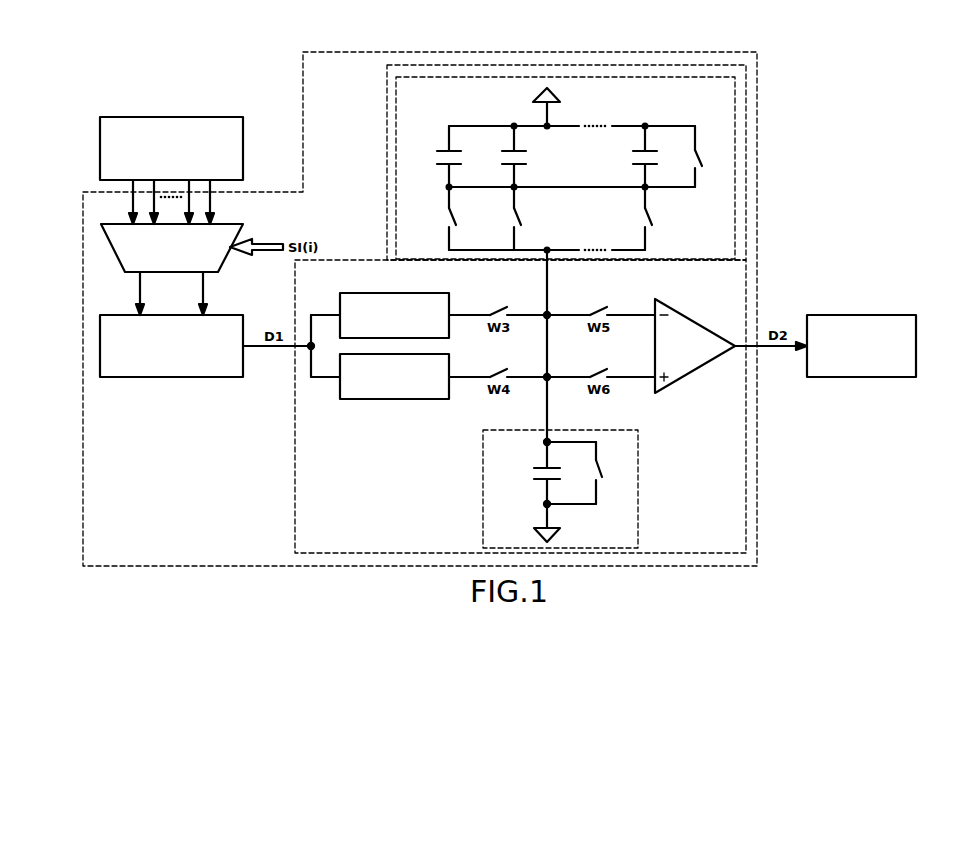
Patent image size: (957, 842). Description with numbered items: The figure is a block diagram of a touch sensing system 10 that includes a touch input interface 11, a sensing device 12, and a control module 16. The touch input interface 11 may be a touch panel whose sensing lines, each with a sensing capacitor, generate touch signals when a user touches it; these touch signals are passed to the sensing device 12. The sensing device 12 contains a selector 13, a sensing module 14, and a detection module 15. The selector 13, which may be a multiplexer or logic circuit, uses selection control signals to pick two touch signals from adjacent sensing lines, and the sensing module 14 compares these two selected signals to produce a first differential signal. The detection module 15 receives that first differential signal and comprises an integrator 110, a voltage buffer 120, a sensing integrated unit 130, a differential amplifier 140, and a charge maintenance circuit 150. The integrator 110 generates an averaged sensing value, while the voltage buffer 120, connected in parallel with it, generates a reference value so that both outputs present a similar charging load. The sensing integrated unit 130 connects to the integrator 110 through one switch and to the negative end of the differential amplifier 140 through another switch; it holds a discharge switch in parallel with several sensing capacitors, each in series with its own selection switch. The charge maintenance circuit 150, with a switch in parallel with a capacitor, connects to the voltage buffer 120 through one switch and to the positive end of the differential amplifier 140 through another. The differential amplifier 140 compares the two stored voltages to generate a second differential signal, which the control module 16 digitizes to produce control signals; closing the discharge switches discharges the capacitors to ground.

The touch sensing system 10 is at (922, 49).
The touch input interface 11 is at (102, 117).
The sensing device 12 is at (757, 95).
The selector 13 is at (108, 224).
The sensing module 14 is at (117, 377).
The detection module 15 is at (295, 464).
The control module 16 is at (905, 315).
The integrator 110 is at (340, 293).
The voltage buffer 120 is at (345, 399).
The sensing integrated unit 130 is at (617, 259).
The differential amplifier 140 is at (693, 318).
The charge maintenance circuit 150 is at (638, 488).